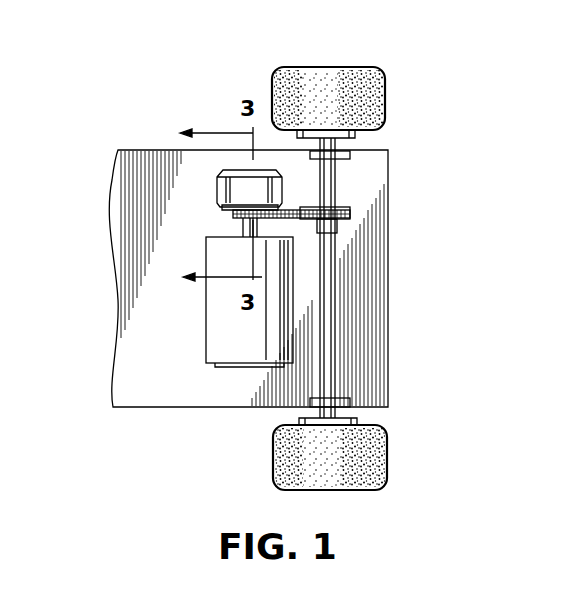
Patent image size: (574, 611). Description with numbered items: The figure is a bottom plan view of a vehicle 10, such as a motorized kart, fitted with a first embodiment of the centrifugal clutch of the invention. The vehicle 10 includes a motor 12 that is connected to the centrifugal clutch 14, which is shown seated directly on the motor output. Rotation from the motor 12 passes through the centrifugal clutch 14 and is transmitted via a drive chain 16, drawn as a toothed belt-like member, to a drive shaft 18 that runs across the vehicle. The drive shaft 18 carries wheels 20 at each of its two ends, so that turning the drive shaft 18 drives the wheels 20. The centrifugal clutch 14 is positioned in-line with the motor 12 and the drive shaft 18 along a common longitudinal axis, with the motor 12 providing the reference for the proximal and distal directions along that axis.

The vehicle 10 is at (121, 62).
The motor 12 is at (226, 335).
The centrifugal clutch 14 is at (214, 188).
The drive chain 16 is at (300, 208).
The drive shaft 18 is at (327, 293).
The wheels 20 is at (373, 66).